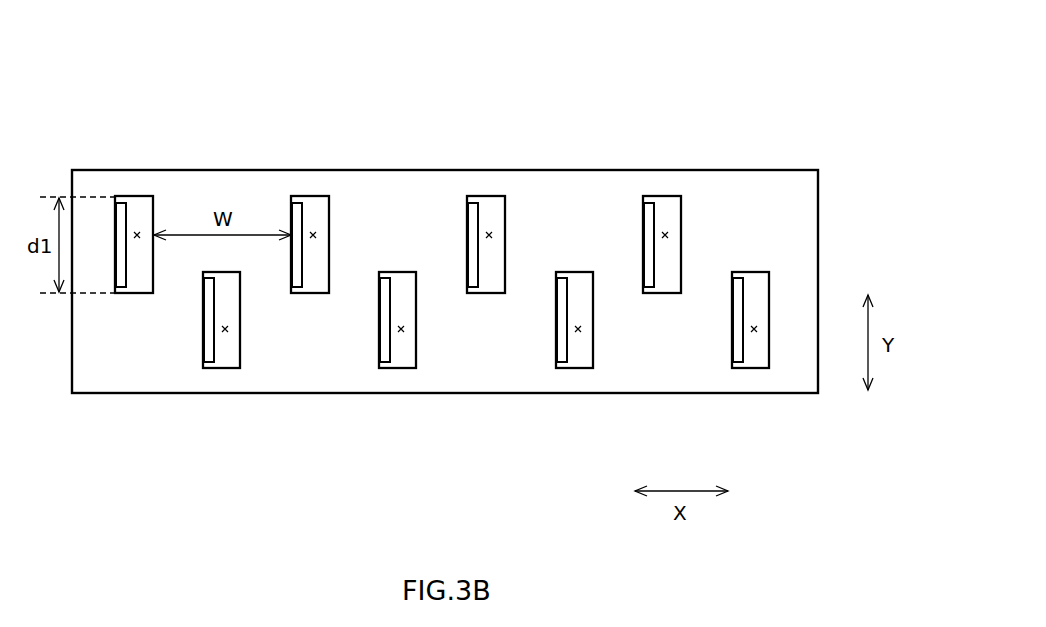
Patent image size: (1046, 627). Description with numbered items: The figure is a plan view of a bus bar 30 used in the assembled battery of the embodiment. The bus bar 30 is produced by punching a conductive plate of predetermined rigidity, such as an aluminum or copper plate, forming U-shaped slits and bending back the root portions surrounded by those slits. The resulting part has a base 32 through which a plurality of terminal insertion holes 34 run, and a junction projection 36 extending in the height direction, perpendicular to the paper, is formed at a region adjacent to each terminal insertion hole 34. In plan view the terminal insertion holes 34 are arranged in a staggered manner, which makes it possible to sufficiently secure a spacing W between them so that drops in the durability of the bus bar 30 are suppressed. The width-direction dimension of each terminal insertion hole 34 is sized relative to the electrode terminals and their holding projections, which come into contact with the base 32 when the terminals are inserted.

The bus bar 30 is at (813, 68).
The base 32 is at (755, 198).
The terminal insertion hole 34 is at (137, 228).
The junction projection 36 is at (120, 200).